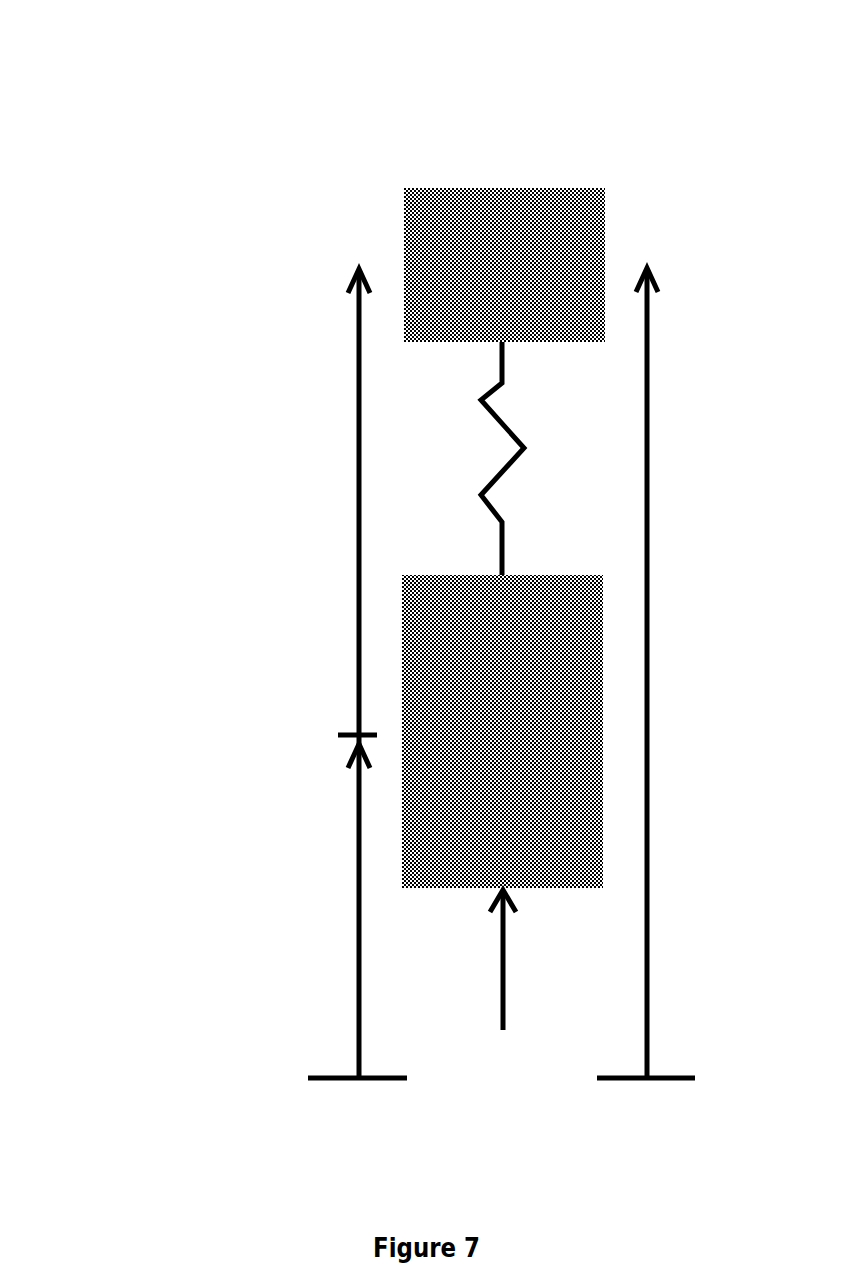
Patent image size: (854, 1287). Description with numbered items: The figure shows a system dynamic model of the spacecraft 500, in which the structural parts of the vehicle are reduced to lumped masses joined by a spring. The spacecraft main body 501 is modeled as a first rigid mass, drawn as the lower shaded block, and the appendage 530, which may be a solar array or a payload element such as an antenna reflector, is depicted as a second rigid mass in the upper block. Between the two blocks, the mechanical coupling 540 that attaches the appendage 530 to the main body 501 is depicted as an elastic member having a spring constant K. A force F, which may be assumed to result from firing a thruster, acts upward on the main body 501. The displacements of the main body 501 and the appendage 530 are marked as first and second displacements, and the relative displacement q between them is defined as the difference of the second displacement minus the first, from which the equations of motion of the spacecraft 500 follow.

The spacecraft 500 is at (160, 50).
The appendage 530 is at (432, 200).
The mechanical coupling 540 is at (505, 418).
The main body 501 is at (470, 568).